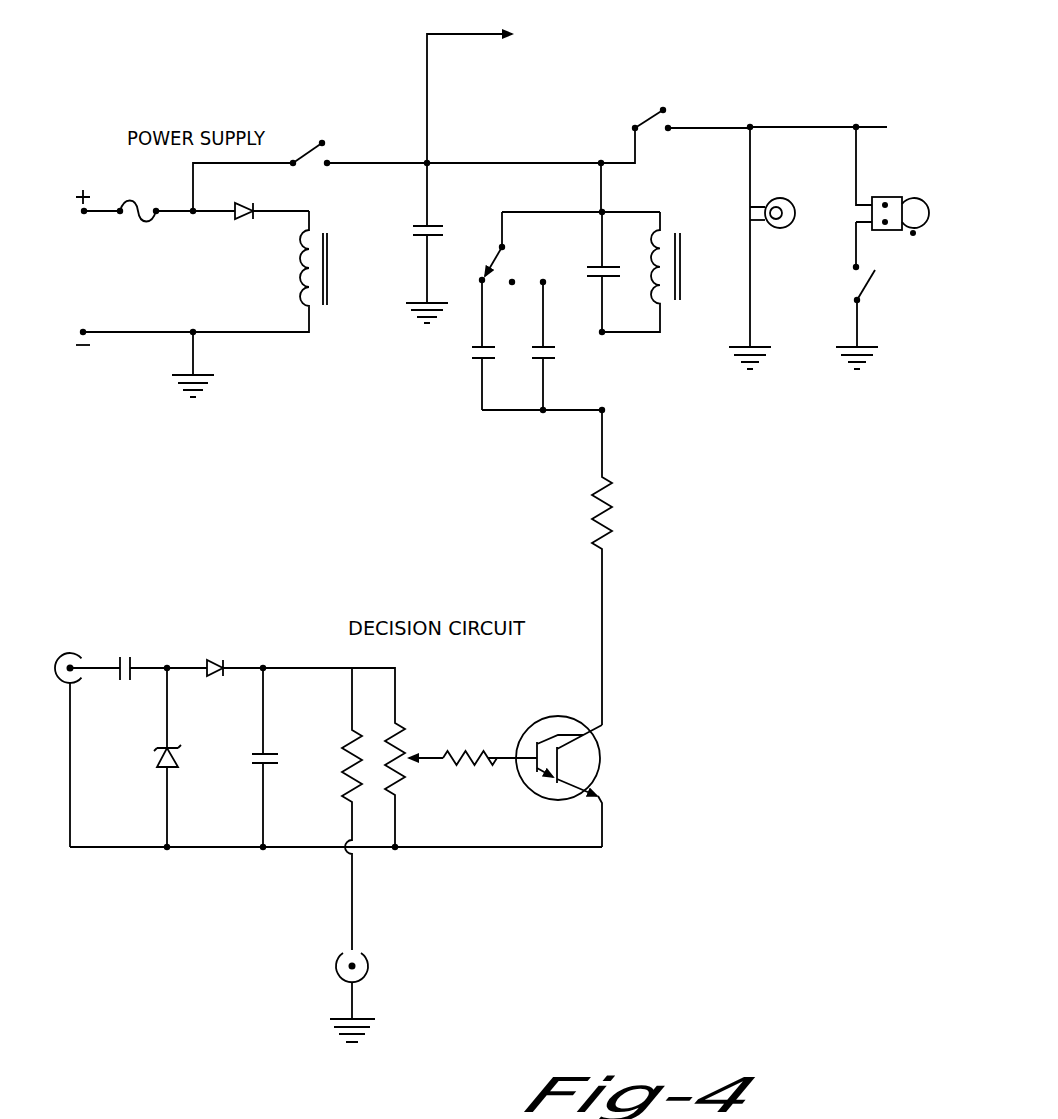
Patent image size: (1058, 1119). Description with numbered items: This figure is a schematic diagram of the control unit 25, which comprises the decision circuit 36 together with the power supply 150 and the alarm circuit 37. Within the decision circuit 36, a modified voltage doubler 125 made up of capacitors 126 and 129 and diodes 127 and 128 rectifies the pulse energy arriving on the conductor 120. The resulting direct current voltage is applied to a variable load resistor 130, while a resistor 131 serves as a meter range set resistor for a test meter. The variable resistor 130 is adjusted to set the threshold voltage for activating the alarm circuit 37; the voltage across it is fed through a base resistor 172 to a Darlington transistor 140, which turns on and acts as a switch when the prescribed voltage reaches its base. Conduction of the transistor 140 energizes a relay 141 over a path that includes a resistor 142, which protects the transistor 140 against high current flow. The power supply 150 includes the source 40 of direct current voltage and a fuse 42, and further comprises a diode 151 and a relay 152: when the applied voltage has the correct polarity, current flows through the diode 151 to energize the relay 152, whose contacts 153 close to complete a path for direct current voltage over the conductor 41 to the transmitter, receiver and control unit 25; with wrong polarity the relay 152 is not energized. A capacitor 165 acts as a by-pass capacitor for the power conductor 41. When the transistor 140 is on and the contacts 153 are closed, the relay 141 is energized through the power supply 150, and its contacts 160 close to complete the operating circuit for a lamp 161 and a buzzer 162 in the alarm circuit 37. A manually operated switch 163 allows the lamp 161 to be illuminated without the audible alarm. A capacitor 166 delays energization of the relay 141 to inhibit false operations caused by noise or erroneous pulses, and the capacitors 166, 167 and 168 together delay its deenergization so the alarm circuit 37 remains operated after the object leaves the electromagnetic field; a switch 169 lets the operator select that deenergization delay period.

The power supply 150 is at (108, 197).
The fuse 42 is at (141, 205).
The diode 151 is at (237, 216).
The relay 152 is at (331, 263).
The source of direct current voltage 40 is at (85, 331).
The contacts 153 is at (331, 160).
The capacitor 165 is at (418, 225).
The conductor 41 is at (457, 36).
The control unit 25 is at (523, 311).
The switch 169 is at (498, 260).
The capacitor 167 is at (490, 360).
The capacitor 168 is at (547, 360).
The capacitor 166 is at (595, 265).
The relay 141 is at (668, 303).
The contacts 160 is at (667, 131).
The alarm circuit 37 is at (811, 222).
The lamp 161 is at (795, 185).
The buzzer 162 is at (897, 197).
The manually operated switch 163 is at (866, 291).
The resistor 142 is at (612, 527).
The Darlington transistor 140 is at (553, 716).
The base resistor 172 is at (448, 758).
The variable load resistor 130 is at (396, 730).
The resistor 131 is at (348, 728).
The capacitor 129 is at (255, 763).
The diode 128 is at (208, 678).
The diode 127 is at (177, 760).
The capacitor 126 is at (133, 678).
The modified voltage doubler 125 is at (161, 658).
The conductor 120 is at (105, 662).
The decision circuit 36 is at (130, 853).